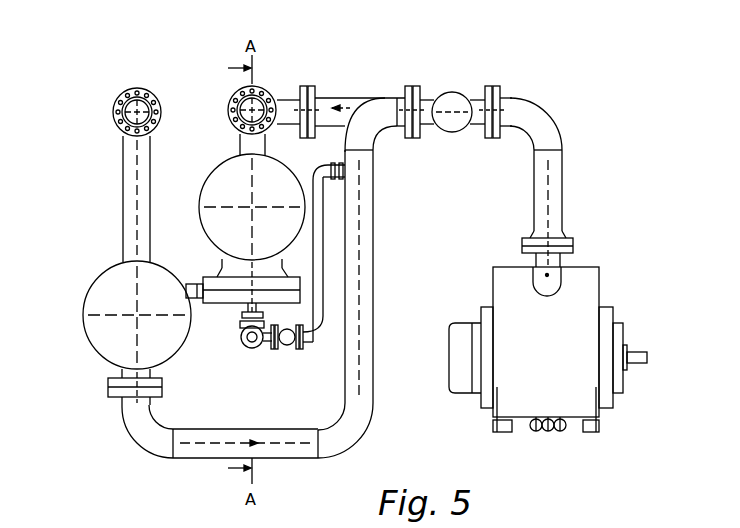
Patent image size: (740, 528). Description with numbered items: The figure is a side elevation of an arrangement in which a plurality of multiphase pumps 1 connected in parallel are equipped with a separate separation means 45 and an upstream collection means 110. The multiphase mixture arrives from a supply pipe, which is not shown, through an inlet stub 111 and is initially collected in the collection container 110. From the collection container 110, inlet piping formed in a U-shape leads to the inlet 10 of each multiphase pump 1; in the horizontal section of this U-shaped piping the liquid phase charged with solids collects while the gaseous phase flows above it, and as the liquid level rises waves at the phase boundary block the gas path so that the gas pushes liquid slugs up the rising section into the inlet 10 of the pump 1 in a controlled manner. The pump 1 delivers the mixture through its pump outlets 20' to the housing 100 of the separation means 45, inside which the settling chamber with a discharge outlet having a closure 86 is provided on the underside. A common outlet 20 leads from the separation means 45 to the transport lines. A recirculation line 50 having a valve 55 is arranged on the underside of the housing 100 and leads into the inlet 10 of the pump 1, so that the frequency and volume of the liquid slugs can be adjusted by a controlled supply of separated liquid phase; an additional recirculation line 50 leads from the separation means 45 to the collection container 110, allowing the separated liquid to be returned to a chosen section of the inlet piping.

The multiphase pump 1 is at (627, 420).
The inlet 10 is at (373, 325).
The common outlet 20 is at (264, 91).
The pump outlet 20' is at (317, 90).
The separation means 45 is at (240, 174).
The recirculation line 50 is at (196, 286).
The valve 55 is at (280, 349).
The closure 86 is at (222, 304).
The housing 100 is at (207, 152).
The collection container 110 is at (86, 300).
The inlet stub 111 is at (123, 157).